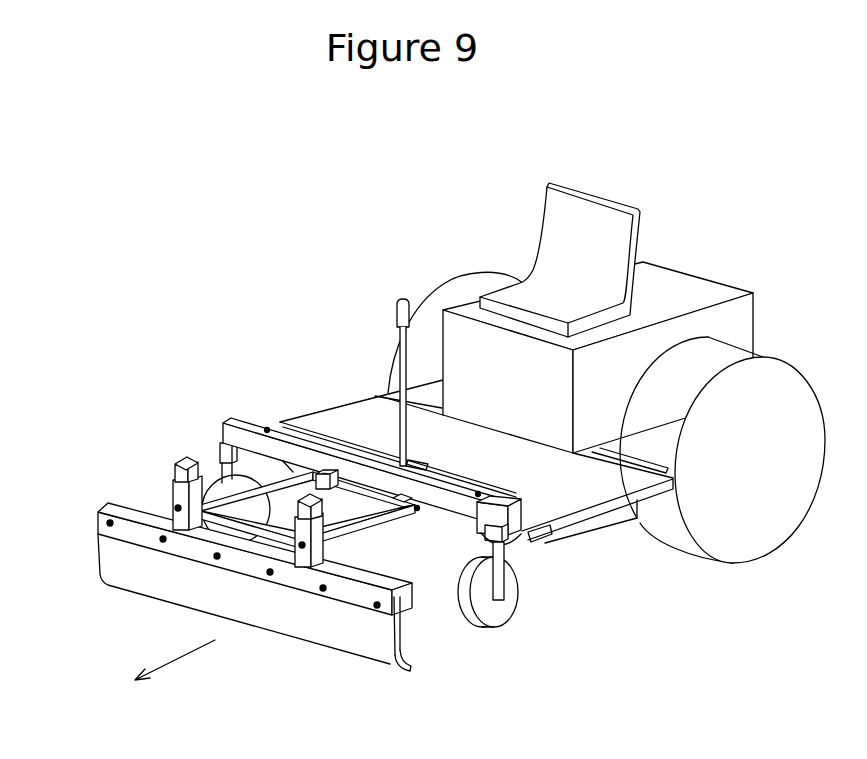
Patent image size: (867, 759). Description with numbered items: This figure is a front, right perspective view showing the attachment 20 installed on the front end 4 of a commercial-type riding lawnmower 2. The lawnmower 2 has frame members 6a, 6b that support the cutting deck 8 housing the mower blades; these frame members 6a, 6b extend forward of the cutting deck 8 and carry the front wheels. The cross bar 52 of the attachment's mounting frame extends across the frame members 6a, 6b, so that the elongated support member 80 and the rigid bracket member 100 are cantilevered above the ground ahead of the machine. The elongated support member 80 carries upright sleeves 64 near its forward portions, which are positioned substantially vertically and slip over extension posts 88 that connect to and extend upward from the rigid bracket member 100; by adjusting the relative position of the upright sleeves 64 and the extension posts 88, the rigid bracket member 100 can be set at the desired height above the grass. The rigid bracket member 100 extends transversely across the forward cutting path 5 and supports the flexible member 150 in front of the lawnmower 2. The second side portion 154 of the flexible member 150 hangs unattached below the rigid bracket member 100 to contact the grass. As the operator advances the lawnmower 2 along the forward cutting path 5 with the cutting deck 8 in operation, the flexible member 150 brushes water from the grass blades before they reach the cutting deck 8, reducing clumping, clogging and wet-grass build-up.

The lawnmower 2 is at (713, 270).
The front end 4 is at (302, 417).
The forward cutting path 5 is at (165, 664).
The frame member 6a is at (218, 451).
The frame member 6b is at (537, 523).
The cutting deck 8 is at (613, 517).
The attachment 20 is at (112, 420).
The cross bar 52 is at (265, 428).
The upright sleeves 64 is at (173, 488).
The elongated support member 80 is at (375, 522).
The extension posts 88 is at (175, 467).
The rigid bracket member 100 is at (102, 524).
The flexible member 150 is at (385, 653).
The second side portion 154 is at (408, 673).